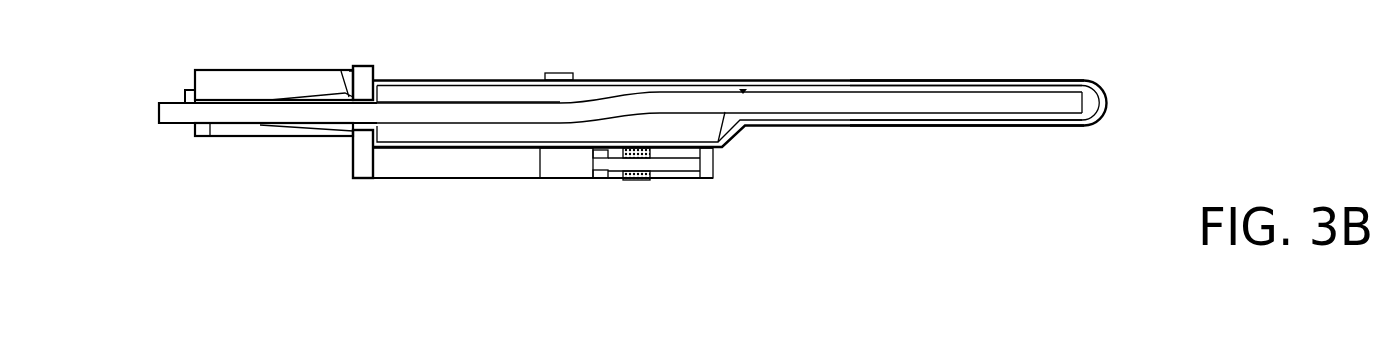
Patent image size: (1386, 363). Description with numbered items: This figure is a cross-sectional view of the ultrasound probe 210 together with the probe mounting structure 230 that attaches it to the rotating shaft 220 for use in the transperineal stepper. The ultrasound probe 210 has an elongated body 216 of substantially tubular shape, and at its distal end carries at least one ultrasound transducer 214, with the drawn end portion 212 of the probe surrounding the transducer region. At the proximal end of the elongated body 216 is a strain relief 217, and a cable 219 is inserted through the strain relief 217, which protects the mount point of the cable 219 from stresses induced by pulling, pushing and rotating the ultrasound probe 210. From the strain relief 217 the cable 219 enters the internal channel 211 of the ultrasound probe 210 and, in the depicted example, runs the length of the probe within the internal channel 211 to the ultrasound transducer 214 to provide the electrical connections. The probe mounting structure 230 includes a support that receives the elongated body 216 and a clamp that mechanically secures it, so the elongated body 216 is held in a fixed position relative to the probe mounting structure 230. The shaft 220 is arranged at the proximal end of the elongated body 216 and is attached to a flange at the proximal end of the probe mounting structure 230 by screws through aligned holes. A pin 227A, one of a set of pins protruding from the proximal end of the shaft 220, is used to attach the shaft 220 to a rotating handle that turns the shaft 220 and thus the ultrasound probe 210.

The ultrasound probe 210 is at (518, 68).
The internal channel 211 is at (590, 97).
The inner tube 212 is at (885, 128).
The ultrasound transducer 214 is at (930, 80).
The elongated body 216 is at (407, 80).
The strain relief 217 is at (346, 97).
The cable 219 is at (172, 125).
The shaft 220 is at (233, 137).
The pin 227A is at (190, 90).
The probe mounting structure 230 is at (518, 184).